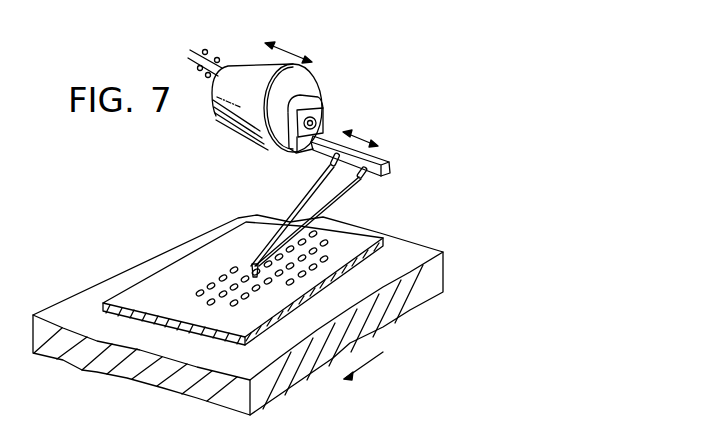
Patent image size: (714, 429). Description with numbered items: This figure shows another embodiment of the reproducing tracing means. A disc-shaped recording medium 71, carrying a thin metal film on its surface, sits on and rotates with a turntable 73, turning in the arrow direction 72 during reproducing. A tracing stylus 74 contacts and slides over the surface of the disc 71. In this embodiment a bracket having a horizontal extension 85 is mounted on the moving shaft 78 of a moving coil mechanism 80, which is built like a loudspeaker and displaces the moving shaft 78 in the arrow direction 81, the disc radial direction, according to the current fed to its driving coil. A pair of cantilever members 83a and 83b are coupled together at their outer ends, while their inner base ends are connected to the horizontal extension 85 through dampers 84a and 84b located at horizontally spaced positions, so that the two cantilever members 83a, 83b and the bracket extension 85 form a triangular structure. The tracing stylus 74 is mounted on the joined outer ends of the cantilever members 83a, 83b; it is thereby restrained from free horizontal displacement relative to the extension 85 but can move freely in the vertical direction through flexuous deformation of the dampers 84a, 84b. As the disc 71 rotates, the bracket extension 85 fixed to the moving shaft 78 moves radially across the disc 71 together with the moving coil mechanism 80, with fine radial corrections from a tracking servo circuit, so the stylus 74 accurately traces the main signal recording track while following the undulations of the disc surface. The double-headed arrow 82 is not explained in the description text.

The disc-shaped recording medium 71 is at (170, 264).
The arrow direction 72 is at (371, 361).
The turntable 73 is at (424, 298).
The tracing stylus 74 is at (252, 266).
The moving shaft 78 is at (317, 100).
The moving coil mechanism 80 is at (228, 130).
The arrow direction 81 is at (362, 137).
The motor movement arrow 82 is at (291, 52).
The cantilever member 83a is at (332, 202).
The cantilever member 83b is at (309, 195).
The damper 84a is at (367, 177).
The damper 84b is at (330, 163).
The horizontal extension 85 is at (386, 163).